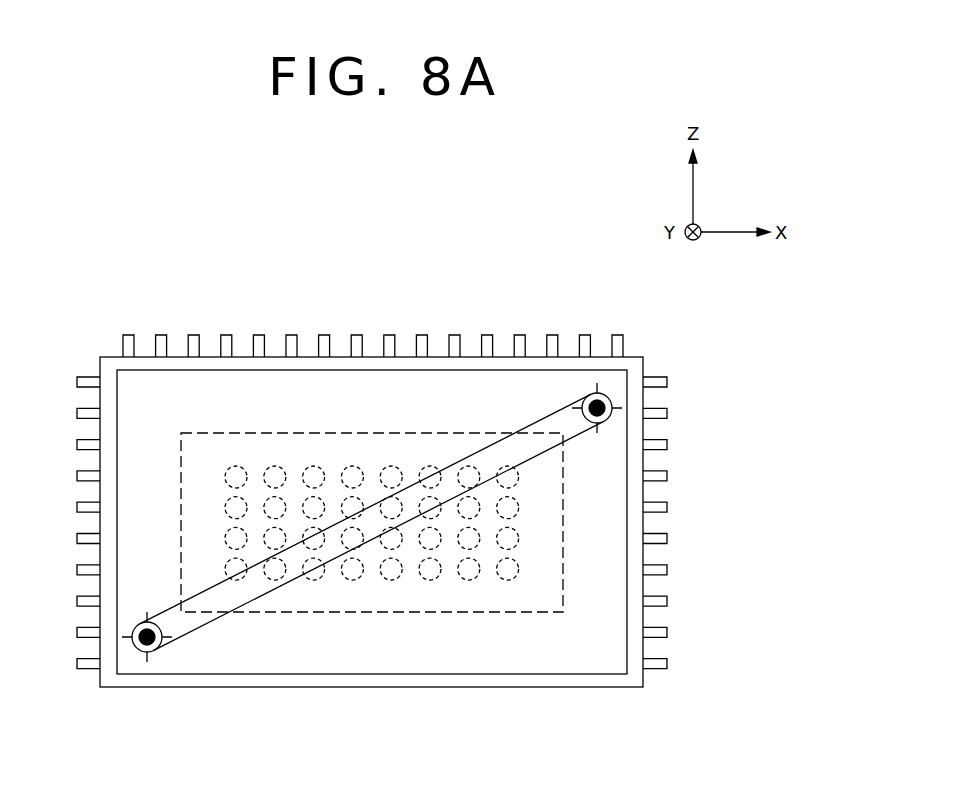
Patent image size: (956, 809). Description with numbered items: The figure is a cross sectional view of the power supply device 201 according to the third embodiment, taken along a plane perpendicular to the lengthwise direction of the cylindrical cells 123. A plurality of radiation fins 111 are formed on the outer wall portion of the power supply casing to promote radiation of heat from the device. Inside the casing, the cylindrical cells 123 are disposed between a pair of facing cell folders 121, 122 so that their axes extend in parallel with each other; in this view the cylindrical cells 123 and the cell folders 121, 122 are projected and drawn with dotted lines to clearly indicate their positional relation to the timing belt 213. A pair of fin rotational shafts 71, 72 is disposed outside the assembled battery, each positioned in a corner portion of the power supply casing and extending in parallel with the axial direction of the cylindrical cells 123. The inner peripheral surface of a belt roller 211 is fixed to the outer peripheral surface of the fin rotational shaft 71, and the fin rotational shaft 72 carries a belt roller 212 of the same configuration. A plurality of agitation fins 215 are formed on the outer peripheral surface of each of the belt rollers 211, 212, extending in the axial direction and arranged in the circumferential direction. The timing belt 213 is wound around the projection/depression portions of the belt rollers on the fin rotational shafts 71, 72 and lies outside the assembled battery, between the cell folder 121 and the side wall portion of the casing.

The power supply device 201 is at (473, 300).
The radiation fins 111 is at (265, 347).
The cell folder 121 is at (404, 421).
The cell folder 122 is at (497, 432).
The cylindrical cells 123 is at (312, 466).
The fin rotational shaft 71 is at (135, 628).
The fin rotational shaft 72 is at (613, 397).
The belt roller 211 is at (133, 643).
The belt roller 212 is at (613, 418).
The timing belt 213 is at (175, 606).
The agitation fins 215 is at (147, 654).